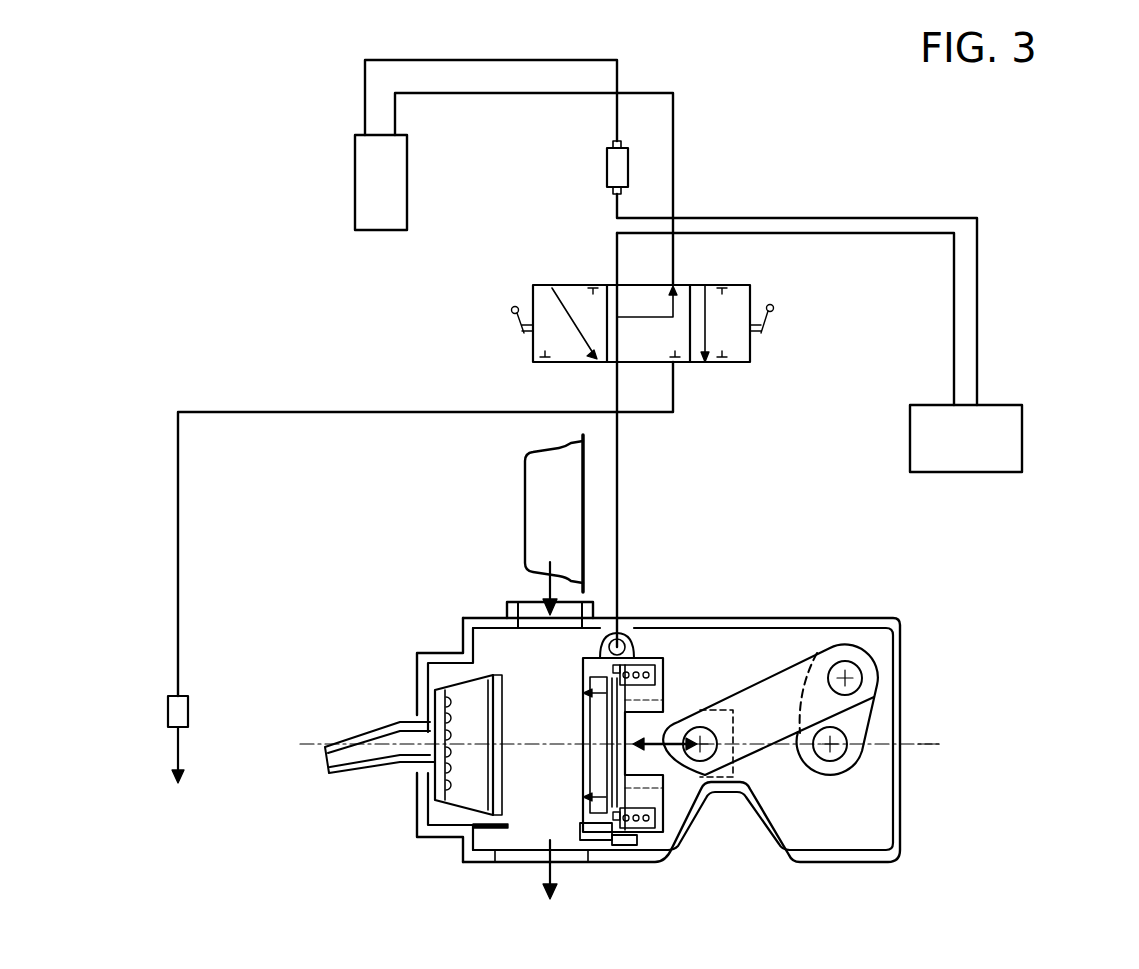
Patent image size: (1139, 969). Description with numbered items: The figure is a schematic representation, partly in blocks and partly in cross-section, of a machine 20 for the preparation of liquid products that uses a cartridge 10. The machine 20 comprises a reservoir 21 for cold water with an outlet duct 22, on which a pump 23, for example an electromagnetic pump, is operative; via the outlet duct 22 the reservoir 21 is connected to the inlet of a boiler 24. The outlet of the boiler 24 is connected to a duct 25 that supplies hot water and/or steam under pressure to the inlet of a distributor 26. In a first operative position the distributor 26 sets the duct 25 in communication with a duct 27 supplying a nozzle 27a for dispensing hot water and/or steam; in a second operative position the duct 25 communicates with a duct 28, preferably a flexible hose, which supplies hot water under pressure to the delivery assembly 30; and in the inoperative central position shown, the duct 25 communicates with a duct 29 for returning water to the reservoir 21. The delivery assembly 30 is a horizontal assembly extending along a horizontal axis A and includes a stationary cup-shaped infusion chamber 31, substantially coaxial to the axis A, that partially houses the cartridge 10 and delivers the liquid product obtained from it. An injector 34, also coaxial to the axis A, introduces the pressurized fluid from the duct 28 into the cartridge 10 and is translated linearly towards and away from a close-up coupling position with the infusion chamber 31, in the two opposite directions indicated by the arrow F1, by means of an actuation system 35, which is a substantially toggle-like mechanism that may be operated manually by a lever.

The cartridge 10 is at (505, 531).
The machine for the preparation of liquid products 20 is at (1090, 250).
The reservoir 21 is at (366, 188).
The outlet duct 22 is at (435, 60).
The pump 23 is at (607, 164).
The boiler 24 is at (1010, 404).
The duct 25 is at (887, 236).
The distributor 26 is at (719, 374).
The duct 27 is at (306, 410).
The nozzle 27a is at (189, 711).
The duct 28 is at (619, 490).
The duct 29 is at (674, 112).
The delivery assembly 30 is at (907, 858).
The infusion chamber 31 is at (490, 648).
The injector device 34 is at (706, 648).
The actuation system 35 is at (770, 650).
The horizontal axis A is at (918, 744).
The arrow F1 is at (660, 763).